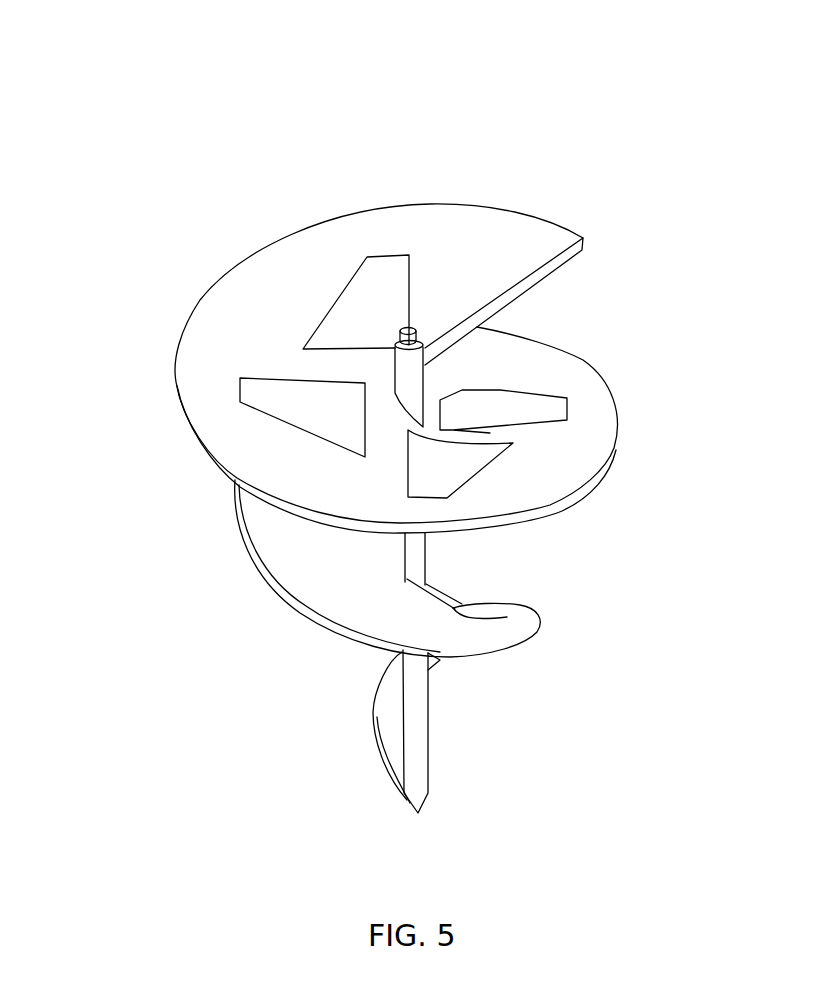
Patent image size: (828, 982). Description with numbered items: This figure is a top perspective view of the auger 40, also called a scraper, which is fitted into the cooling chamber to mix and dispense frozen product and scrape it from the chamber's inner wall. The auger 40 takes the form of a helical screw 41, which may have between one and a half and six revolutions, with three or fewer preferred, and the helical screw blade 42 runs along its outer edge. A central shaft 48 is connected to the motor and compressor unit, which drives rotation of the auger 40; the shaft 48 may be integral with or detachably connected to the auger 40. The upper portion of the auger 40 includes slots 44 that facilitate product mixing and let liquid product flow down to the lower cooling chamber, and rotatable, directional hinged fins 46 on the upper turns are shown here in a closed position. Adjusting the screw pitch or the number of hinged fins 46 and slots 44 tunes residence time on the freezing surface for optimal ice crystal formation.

The auger 40 is at (387, 174).
The helical screw 41 is at (258, 333).
The helical screw blade 42 is at (257, 250).
The slots 44 is at (237, 397).
The hinged fins 46 is at (452, 479).
The shaft 48 is at (423, 375).